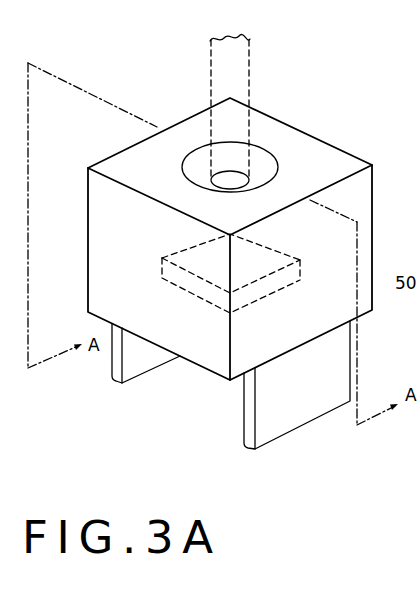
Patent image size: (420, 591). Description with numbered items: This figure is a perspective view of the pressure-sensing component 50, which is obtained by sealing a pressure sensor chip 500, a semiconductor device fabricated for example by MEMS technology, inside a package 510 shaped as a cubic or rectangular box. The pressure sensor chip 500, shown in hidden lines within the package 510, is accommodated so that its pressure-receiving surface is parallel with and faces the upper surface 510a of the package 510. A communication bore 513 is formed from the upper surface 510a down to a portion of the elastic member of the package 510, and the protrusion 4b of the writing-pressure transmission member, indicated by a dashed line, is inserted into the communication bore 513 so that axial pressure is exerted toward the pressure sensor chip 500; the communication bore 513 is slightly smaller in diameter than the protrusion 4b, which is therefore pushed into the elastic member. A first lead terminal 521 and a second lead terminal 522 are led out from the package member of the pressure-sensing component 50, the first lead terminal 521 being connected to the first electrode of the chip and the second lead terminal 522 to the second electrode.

The pressure-sensing component 50 is at (217, 260).
The package 510 is at (204, 239).
The upper surface of the package 510a is at (138, 157).
The communication bore 513 is at (232, 183).
The pressure sensor chip 500 is at (157, 272).
The first lead terminal 521 is at (306, 404).
The second lead terminal 522 is at (132, 362).
The protrusion 4b is at (240, 56).